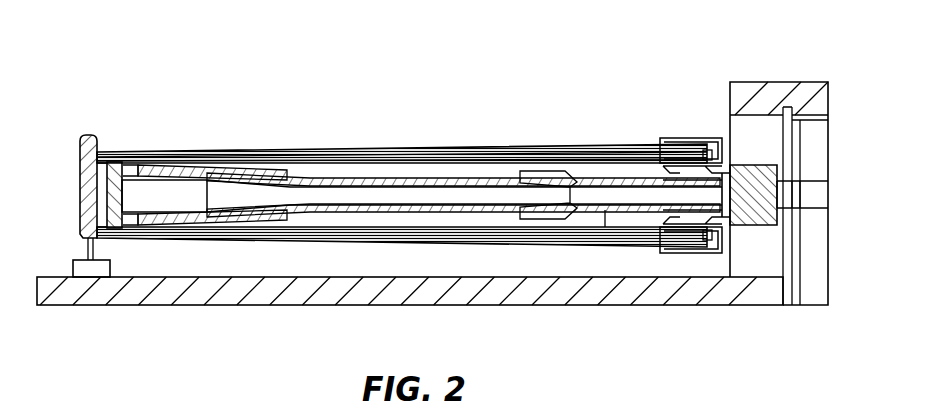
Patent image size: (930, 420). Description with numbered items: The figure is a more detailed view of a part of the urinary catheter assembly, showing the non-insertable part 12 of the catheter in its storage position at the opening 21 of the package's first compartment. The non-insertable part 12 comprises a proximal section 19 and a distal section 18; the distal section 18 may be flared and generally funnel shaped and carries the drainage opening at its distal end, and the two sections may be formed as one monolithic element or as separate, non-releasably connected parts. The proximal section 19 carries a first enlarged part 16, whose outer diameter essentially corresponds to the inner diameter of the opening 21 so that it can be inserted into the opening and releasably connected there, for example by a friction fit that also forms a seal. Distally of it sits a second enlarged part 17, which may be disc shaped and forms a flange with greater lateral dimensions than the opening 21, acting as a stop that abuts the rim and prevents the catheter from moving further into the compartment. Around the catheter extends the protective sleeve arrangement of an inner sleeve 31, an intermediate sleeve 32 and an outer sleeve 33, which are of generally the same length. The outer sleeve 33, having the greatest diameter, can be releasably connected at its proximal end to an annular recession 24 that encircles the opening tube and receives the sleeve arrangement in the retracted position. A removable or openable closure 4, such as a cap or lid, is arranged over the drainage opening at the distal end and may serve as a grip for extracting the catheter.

The closure 4 is at (80, 190).
The non-insertable part 12 is at (320, 212).
The enlarged part 16 is at (710, 157).
The second enlarged part 17 is at (667, 177).
The distal section 18 is at (415, 212).
The proximal section 19 is at (605, 212).
The opening 21 is at (750, 164).
The annular recession 24 is at (681, 247).
The inner sleeve 31 is at (332, 149).
The intermediate sleeve 32 is at (383, 149).
The outer sleeve 33 is at (433, 148).